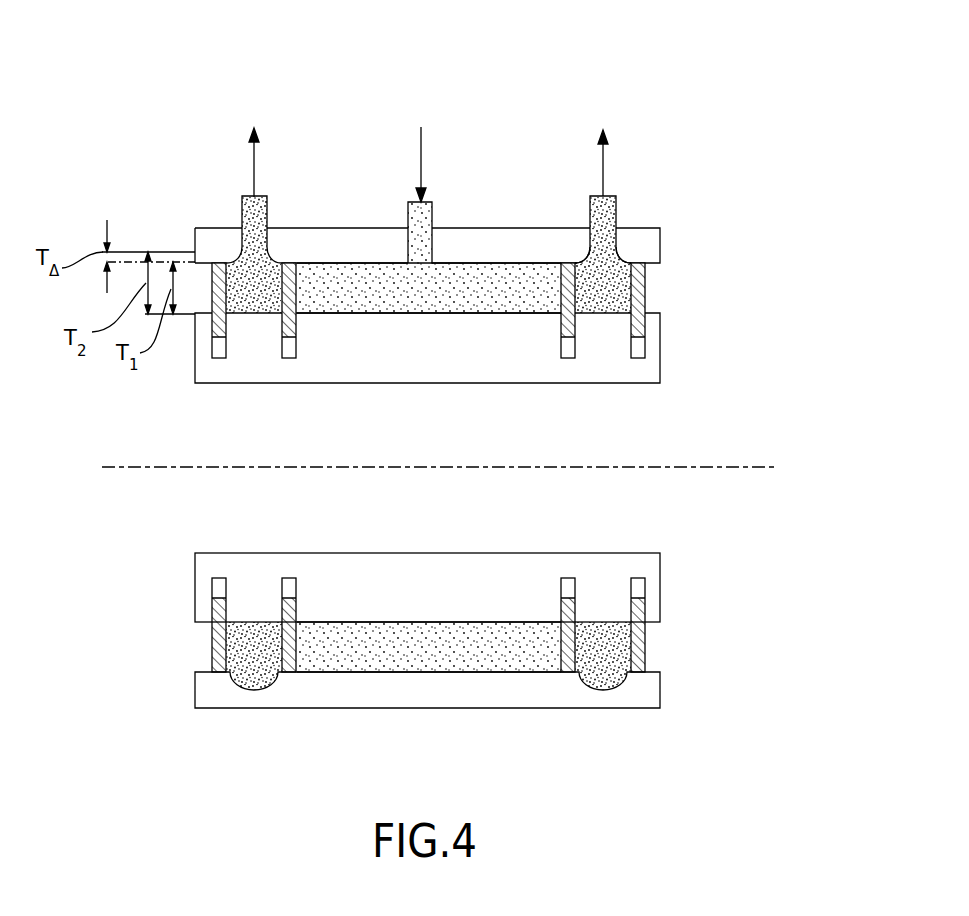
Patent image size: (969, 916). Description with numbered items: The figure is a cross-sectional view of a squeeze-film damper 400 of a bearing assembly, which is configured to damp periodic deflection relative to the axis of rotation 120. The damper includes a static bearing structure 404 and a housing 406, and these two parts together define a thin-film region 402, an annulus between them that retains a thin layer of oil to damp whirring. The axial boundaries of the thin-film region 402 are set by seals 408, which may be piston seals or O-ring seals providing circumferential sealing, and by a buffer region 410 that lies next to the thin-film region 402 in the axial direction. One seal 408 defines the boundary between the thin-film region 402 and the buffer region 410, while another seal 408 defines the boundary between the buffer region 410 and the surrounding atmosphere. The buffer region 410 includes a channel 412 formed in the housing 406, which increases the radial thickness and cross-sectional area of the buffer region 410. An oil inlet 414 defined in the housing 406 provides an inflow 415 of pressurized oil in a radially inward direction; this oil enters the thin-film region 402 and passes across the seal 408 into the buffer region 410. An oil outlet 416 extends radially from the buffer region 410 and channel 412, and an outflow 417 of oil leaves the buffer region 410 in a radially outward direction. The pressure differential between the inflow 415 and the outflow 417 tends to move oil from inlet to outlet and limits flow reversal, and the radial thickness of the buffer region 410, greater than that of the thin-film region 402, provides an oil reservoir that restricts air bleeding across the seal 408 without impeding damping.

The squeeze-film damper 400 is at (180, 92).
The thin-film region 402 is at (474, 288).
The static bearing structure 404 is at (492, 372).
The housing 406 is at (313, 228).
The seals 408 is at (633, 311).
The buffer region 410 is at (608, 276).
The channel 412 is at (604, 258).
The oil inlet 414 is at (422, 218).
The inflow 415 is at (421, 145).
The oil outlet 416 is at (607, 210).
The outflow 417 is at (600, 160).
The axis of rotation 120 is at (733, 468).